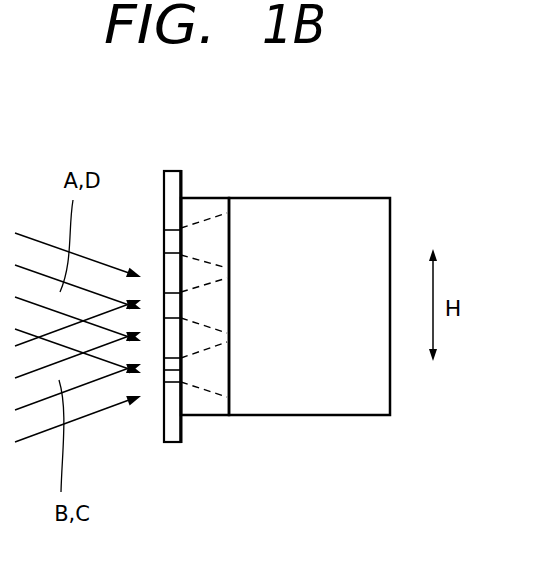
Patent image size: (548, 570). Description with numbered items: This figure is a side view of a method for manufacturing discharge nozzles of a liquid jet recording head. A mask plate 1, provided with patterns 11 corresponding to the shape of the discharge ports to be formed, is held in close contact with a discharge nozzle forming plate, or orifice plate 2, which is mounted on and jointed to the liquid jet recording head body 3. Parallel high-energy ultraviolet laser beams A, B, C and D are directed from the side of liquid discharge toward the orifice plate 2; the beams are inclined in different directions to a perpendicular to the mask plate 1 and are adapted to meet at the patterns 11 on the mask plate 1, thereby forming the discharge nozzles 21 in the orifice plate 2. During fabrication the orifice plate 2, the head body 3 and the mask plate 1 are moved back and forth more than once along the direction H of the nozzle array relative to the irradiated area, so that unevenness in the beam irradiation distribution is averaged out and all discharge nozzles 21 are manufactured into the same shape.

The mask plate 1 is at (172, 444).
The patterns 11 is at (172, 369).
The discharge nozzle forming plate (orifice plate) 2 is at (200, 208).
The discharge nozzles 21 is at (220, 238).
The liquid jet recording head body 3 is at (322, 404).